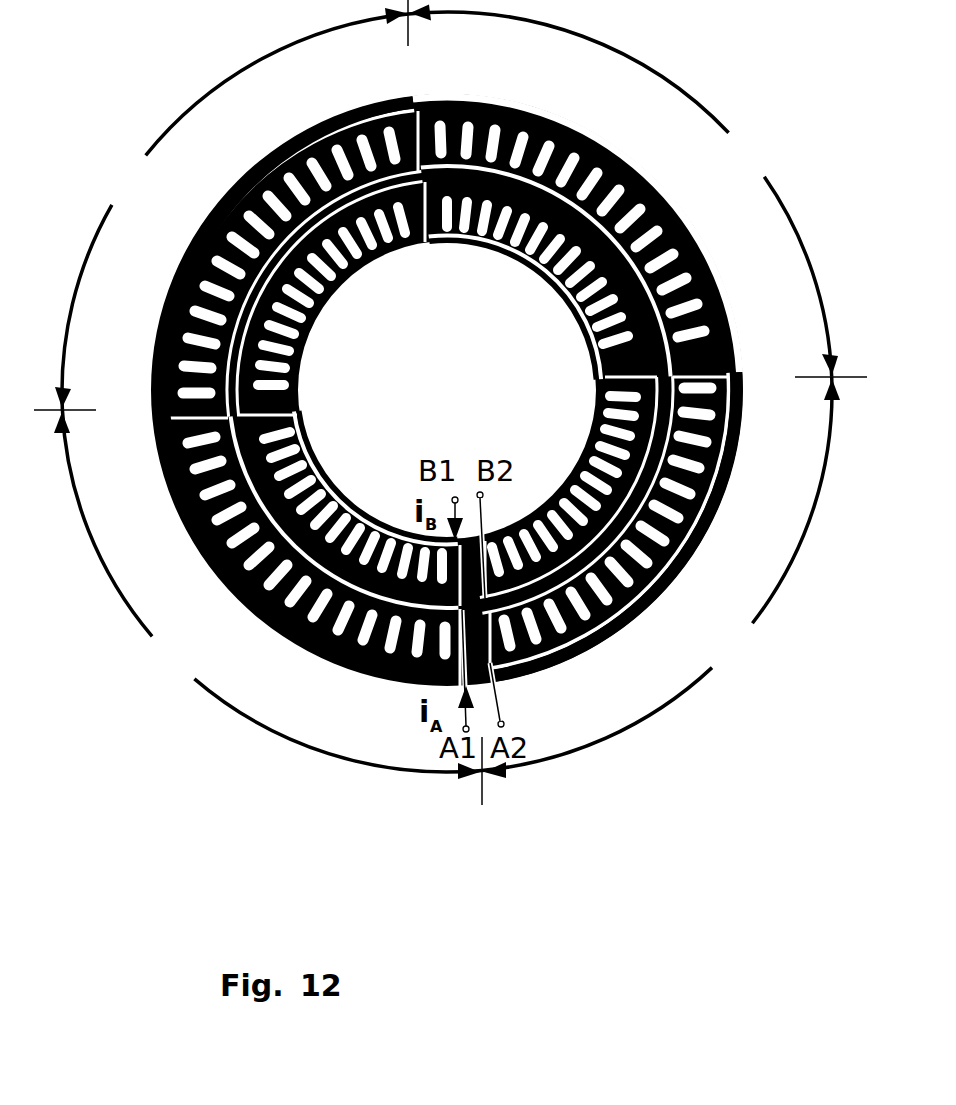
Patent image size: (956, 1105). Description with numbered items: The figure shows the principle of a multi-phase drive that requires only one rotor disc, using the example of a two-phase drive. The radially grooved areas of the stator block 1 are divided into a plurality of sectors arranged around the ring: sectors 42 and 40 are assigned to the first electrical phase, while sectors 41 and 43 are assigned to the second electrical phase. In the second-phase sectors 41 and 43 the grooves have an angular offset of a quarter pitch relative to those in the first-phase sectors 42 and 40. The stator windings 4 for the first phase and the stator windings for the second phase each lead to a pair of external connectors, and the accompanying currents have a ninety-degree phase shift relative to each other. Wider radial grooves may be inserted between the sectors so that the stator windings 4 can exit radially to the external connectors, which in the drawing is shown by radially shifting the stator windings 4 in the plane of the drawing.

The stator block 1 is at (738, 332).
The stator windings 4 is at (325, 473).
The sector 40 is at (637, 188).
The sector 41 is at (231, 209).
The sector 42 is at (258, 594).
The sector 43 is at (661, 591).